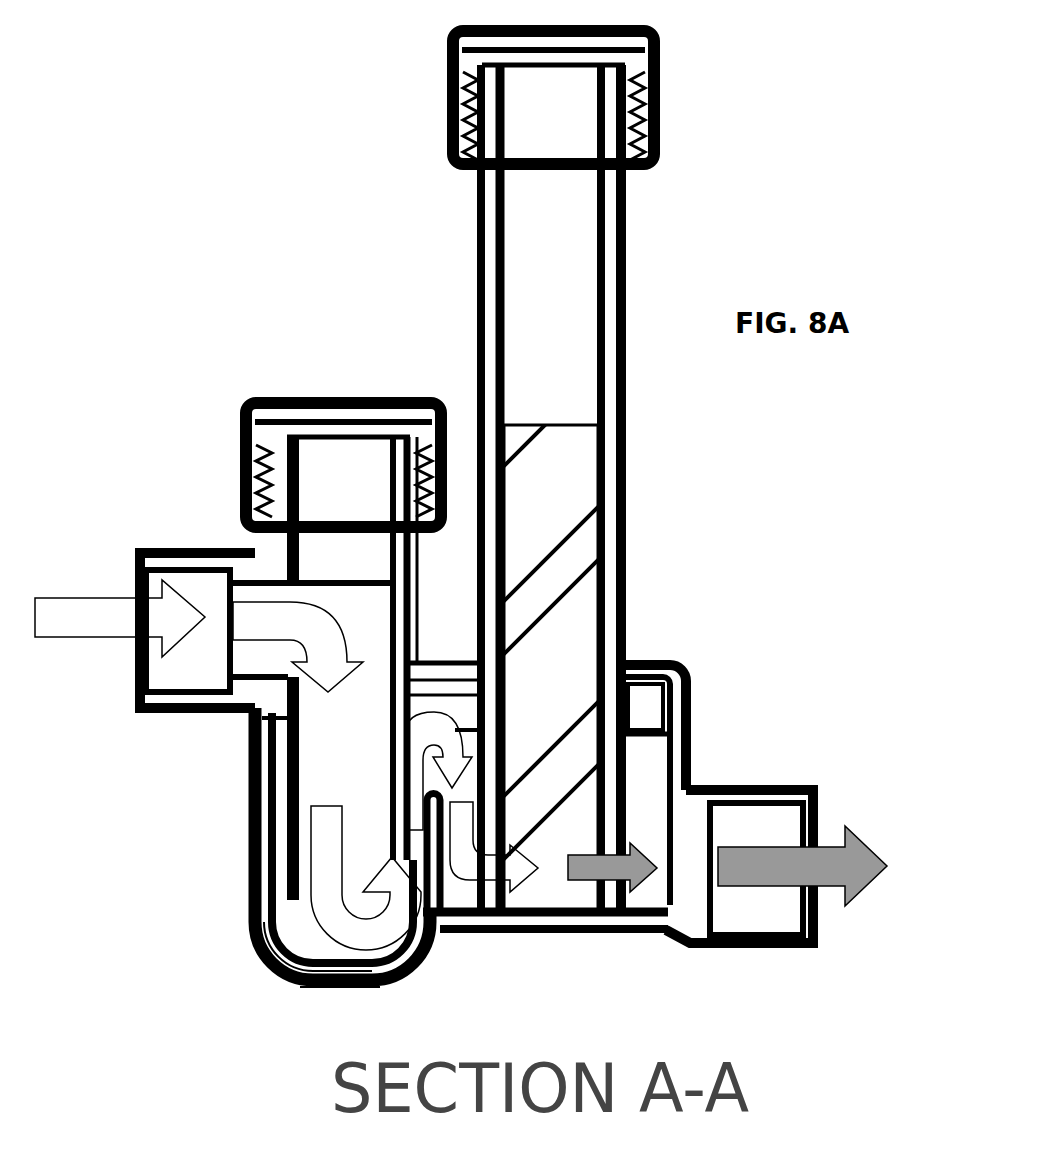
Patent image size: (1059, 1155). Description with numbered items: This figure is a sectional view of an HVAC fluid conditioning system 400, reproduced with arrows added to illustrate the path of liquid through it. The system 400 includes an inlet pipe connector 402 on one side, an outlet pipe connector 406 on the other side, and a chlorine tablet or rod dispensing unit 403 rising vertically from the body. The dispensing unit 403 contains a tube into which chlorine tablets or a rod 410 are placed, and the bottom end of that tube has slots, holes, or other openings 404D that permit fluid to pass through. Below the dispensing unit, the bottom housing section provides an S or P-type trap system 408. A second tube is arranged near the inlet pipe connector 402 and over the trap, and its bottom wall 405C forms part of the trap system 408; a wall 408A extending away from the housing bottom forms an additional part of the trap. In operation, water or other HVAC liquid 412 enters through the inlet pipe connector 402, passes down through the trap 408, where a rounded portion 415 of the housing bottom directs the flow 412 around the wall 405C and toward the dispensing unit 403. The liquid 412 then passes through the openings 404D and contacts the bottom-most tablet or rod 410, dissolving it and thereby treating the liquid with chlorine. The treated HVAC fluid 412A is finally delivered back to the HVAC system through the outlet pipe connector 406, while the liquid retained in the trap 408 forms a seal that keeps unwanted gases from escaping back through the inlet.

The HVAC fluid conditioning system 400 is at (220, 206).
The inlet pipe connector 402 is at (141, 550).
The chlorine tablet or rod dispensing unit 403 is at (646, 228).
The openings 404D is at (490, 903).
The bottom wall 405C is at (393, 778).
The outlet pipe connector 406 is at (755, 784).
The S or P-type trap system 408 is at (203, 966).
The wall 408A is at (330, 980).
The chlorine tablets or rod 410 is at (586, 628).
The HVAC liquid 412 is at (300, 855).
The treated HVAC fluid 412A is at (822, 888).
The rounded portion 415 is at (282, 972).